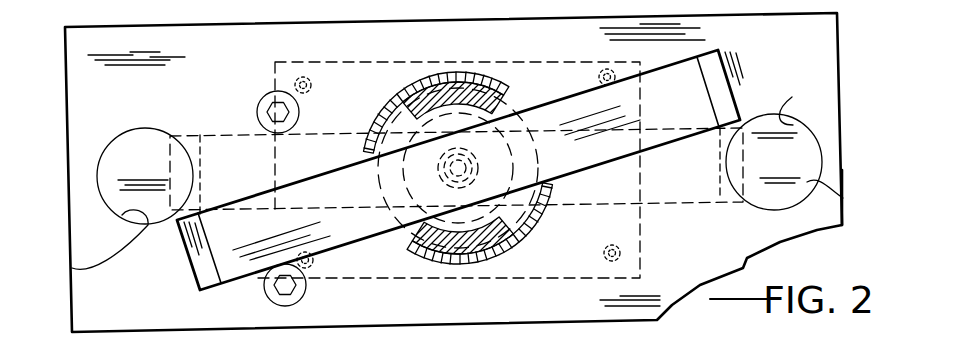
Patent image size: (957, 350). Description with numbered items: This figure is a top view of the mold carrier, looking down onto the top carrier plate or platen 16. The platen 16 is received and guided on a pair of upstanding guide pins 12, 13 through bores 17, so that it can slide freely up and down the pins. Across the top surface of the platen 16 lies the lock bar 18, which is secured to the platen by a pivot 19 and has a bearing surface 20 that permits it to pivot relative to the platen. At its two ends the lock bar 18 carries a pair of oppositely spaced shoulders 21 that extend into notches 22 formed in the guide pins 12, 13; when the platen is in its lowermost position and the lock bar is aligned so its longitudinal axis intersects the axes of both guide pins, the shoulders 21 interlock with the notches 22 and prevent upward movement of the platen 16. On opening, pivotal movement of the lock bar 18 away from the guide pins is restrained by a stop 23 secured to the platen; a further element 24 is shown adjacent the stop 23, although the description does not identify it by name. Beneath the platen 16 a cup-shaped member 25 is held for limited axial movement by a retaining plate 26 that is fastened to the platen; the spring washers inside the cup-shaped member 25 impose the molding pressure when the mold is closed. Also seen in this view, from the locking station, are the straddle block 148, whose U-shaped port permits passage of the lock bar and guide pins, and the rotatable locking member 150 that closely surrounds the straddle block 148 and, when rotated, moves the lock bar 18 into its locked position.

The guide pin 12 is at (72, 268).
The guide pin 13 is at (843, 198).
The top carrier plate or platen 16 is at (710, 253).
The bore 17 is at (147, 228).
The lock bar 18 is at (203, 133).
The pivot 19 is at (517, 250).
The bearing surface 20 is at (552, 186).
The shoulder 21 is at (720, 72).
The notch 22 is at (170, 163).
The stop 23 is at (257, 112).
The locating hole 24 is at (270, 97).
The cup-shaped member 25 is at (392, 102).
The retaining plate 26 is at (553, 62).
The straddle block 148 is at (500, 110).
The rotatable locking member 150 is at (436, 77).